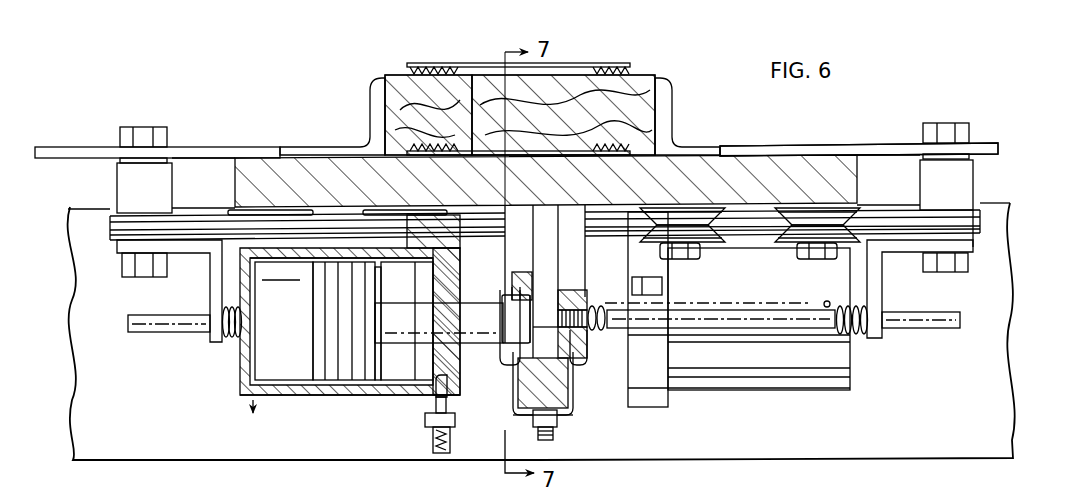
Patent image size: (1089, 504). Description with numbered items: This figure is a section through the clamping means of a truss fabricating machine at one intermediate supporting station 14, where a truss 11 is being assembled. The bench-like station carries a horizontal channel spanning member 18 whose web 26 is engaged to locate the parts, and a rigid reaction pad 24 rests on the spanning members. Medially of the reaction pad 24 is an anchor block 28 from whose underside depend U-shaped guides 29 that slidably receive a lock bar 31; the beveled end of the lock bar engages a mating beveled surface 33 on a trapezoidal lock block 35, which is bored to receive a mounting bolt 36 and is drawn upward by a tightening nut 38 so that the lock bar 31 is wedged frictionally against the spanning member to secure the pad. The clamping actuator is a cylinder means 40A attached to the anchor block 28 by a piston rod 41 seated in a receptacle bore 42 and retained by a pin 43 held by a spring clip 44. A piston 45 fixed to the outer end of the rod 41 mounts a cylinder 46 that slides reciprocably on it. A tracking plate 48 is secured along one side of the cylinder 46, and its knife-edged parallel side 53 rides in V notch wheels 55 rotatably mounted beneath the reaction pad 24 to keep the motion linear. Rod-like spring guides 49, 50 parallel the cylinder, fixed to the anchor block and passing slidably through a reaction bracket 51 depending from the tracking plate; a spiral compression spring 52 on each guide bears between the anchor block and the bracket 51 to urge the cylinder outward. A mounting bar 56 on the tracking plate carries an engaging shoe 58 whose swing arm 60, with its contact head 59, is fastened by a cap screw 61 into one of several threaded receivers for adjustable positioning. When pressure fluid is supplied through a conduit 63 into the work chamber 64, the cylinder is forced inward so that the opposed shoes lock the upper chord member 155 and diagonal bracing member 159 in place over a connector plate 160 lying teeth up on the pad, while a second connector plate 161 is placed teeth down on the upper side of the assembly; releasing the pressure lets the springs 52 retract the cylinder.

The truss 11 is at (653, 72).
The intermediate supporting station 14 is at (1020, 115).
The upper spanning member 18 is at (985, 393).
The reaction pad 24 is at (735, 160).
The web 26 is at (95, 392).
The anchor block 28 is at (592, 225).
The U-shaped guide 29 is at (572, 417).
The lock bar 31 is at (567, 397).
The beveled surface 33 is at (557, 348).
The lock block 35 is at (577, 298).
The mounting bolt 36 is at (535, 437).
The tightening nut 38 is at (557, 423).
The cylinder means 40A is at (337, 398).
The piston rod 41 is at (487, 323).
The receptacle bore 42 is at (533, 305).
The pin 43 is at (510, 292).
The spring clip 44 is at (495, 347).
The piston 45 is at (315, 318).
The cylinder 46 is at (378, 390).
The tracking plate 48 is at (108, 226).
The spring guide 49 is at (940, 330).
The spring guide 50 is at (150, 326).
The reaction bracket 51 is at (210, 283).
The spiral compression spring 52 is at (235, 340).
The parallel side 53 is at (110, 235).
The V notch wheel 55 is at (275, 209).
The mounting bar 56 is at (120, 176).
The engaging shoe 58 is at (72, 145).
The contact head 59 is at (375, 90).
The swing arm 60 is at (235, 147).
The cap screw 61 is at (135, 127).
The conduit 63 is at (433, 440).
The work chamber 64 is at (418, 374).
The upper chord member 155 is at (632, 82).
The diagonal bracing member 159 is at (395, 110).
The connector plate 160 is at (600, 157).
The connector plate 161 is at (435, 62).